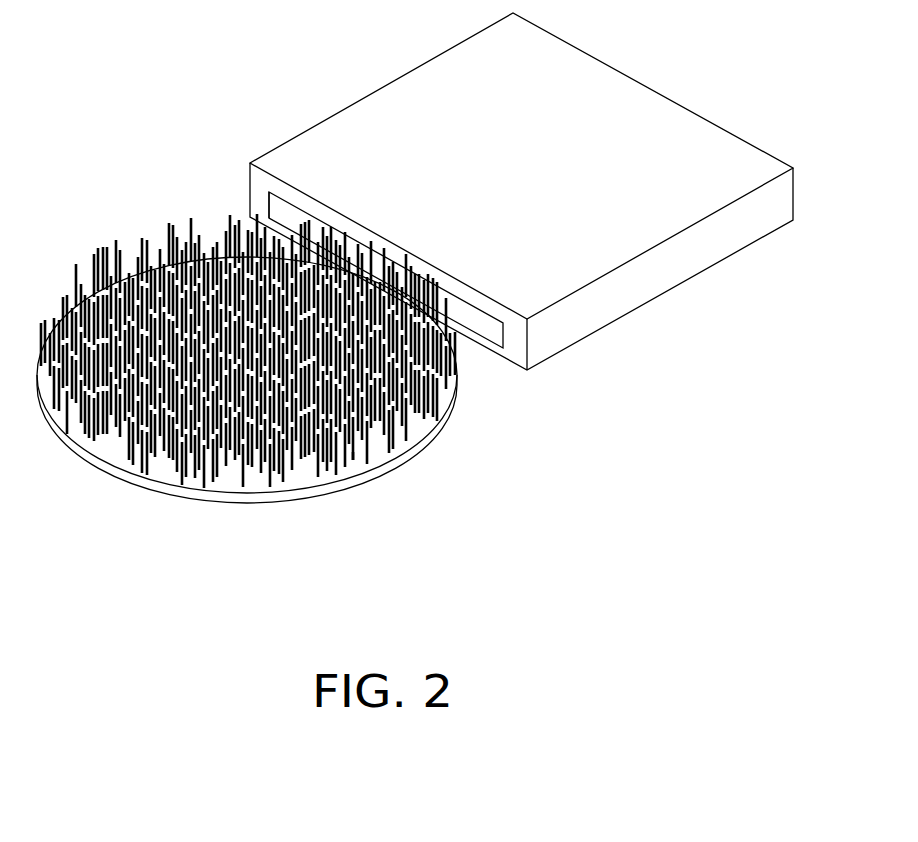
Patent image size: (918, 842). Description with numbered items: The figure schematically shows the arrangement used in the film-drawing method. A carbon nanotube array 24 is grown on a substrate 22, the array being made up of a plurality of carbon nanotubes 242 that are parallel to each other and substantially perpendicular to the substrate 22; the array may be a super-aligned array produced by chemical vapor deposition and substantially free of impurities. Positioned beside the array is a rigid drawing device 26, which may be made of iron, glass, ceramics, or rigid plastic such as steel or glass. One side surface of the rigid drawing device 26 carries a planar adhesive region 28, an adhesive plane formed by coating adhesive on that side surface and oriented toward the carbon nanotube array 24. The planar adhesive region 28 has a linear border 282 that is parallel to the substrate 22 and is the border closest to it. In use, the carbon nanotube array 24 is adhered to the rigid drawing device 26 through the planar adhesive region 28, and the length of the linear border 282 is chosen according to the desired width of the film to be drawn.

The substrate 22 is at (312, 492).
The carbon nanotube array 24 is at (387, 447).
The carbon nanotubes 242 is at (352, 452).
The rigid drawing device 26 is at (770, 220).
The planar adhesive region 28 is at (283, 208).
The linear border 282 is at (274, 213).